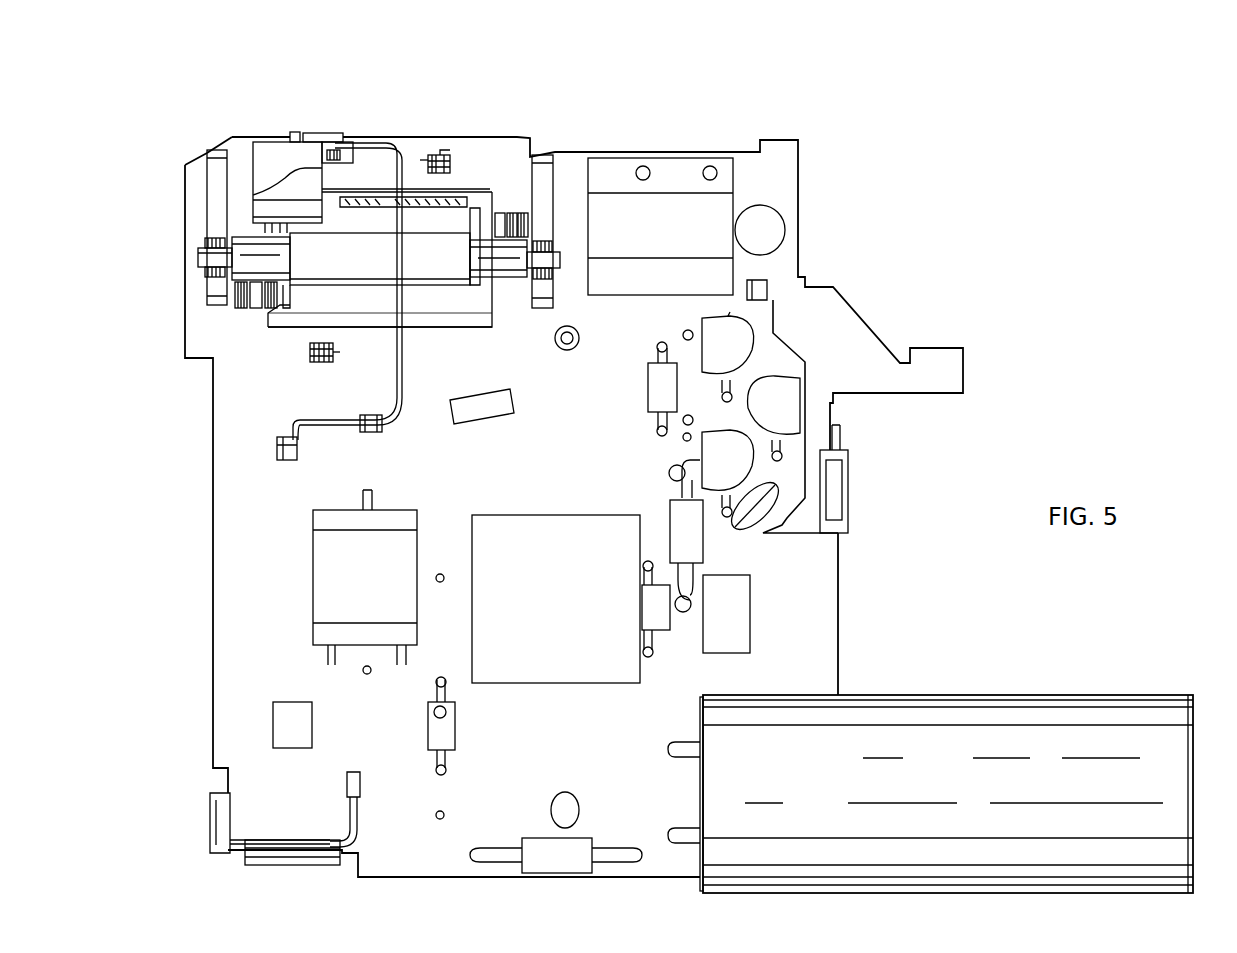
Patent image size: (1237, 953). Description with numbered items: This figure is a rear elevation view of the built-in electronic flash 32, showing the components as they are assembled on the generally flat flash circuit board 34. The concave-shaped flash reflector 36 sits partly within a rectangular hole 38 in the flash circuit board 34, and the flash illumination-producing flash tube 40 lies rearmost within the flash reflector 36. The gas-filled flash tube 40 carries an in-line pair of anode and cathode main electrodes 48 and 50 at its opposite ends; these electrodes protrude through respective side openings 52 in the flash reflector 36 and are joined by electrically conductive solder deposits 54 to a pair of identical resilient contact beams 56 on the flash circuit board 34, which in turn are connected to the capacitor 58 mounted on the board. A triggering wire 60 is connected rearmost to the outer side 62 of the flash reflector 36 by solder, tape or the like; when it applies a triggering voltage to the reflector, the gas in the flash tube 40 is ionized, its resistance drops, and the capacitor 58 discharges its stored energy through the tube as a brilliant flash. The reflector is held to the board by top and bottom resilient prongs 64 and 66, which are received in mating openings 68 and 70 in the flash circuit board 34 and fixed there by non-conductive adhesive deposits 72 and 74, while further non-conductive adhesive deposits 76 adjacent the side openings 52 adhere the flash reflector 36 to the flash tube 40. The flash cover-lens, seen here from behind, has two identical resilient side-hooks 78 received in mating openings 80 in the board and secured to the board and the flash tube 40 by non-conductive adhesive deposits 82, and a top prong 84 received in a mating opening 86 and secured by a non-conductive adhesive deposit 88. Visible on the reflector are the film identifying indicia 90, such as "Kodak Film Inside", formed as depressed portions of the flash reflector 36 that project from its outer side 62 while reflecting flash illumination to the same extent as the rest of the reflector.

The electronic flash 32 is at (882, 178).
The flash circuit board 34 is at (845, 657).
The flash reflector 36 is at (428, 328).
The rectangular hole 38 is at (470, 332).
The flash tube 40 is at (540, 334).
The anode main electrode 48 is at (200, 258).
The cathode main electrode 50 is at (557, 257).
The side openings 52 is at (293, 295).
The solder deposits 54 is at (205, 240).
The resilient contact beams 56 is at (220, 170).
The capacitor 58 is at (1007, 715).
The triggering wire 60 is at (402, 390).
The outer side 62 is at (377, 273).
The top resilient prong 64 is at (450, 160).
The bottom resilient prong 66 is at (333, 355).
The mating opening 68 is at (428, 165).
The mating opening 70 is at (312, 352).
The non-conductive adhesive deposit 72 is at (437, 153).
The non-conductive adhesive deposit 74 is at (333, 344).
The non-conductive adhesive deposits 76 is at (470, 263).
The resilient side-hooks 78 is at (520, 215).
The mating openings 80 is at (383, 260).
The non-conductive adhesive deposits 82 is at (396, 260).
The top prong 84 is at (327, 140).
The mating opening 86 is at (337, 152).
The non-conductive adhesive deposit 88 is at (333, 155).
The film identifying indicia 90 is at (378, 190).